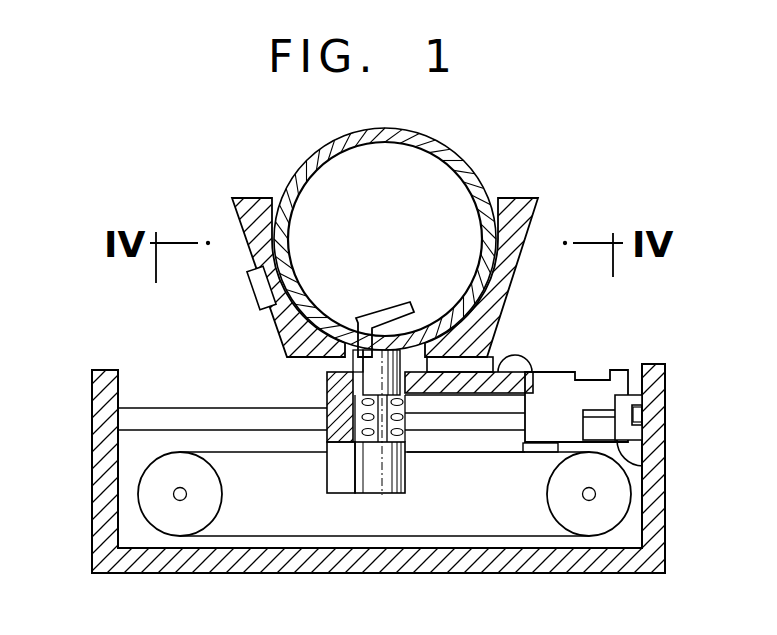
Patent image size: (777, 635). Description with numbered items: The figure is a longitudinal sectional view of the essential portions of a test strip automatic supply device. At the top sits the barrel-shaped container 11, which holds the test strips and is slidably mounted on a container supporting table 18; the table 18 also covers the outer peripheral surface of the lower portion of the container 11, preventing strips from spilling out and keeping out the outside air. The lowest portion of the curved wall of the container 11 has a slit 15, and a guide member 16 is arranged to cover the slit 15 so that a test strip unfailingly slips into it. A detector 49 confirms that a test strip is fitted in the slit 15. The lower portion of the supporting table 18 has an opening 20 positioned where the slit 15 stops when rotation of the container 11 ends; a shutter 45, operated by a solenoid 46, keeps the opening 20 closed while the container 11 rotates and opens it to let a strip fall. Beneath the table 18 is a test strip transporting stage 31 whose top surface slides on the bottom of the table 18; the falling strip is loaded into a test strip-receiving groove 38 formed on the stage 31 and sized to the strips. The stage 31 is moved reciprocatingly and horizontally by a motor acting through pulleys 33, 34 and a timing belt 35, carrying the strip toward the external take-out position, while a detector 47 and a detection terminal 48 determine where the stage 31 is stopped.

The barrel-shaped container 11 is at (447, 152).
The slit 15 is at (393, 335).
The guide member 16 is at (373, 313).
The container supporting table 18 is at (247, 198).
The opening 20 is at (415, 362).
The test strip transporting stage 31 is at (550, 349).
The pulley 33 is at (648, 503).
The pulley 34 is at (150, 505).
The timing belt 35 is at (267, 540).
The test strip-receiving groove 38 is at (587, 358).
The shutter 45 is at (327, 370).
The solenoid 46 is at (373, 487).
The detector 47 is at (657, 410).
The detection terminal 48 is at (668, 463).
The detector 49 is at (253, 295).